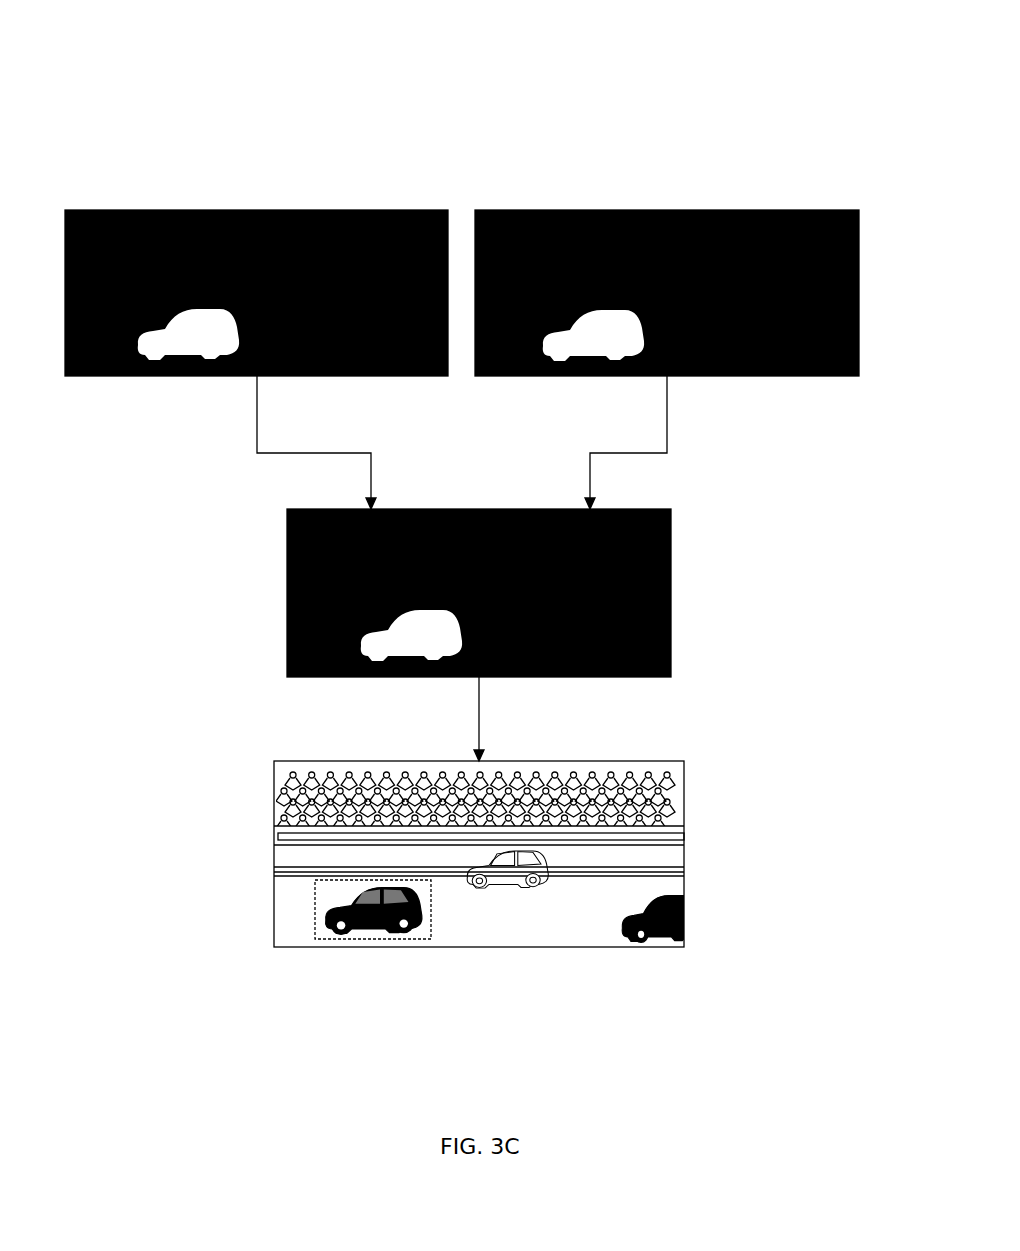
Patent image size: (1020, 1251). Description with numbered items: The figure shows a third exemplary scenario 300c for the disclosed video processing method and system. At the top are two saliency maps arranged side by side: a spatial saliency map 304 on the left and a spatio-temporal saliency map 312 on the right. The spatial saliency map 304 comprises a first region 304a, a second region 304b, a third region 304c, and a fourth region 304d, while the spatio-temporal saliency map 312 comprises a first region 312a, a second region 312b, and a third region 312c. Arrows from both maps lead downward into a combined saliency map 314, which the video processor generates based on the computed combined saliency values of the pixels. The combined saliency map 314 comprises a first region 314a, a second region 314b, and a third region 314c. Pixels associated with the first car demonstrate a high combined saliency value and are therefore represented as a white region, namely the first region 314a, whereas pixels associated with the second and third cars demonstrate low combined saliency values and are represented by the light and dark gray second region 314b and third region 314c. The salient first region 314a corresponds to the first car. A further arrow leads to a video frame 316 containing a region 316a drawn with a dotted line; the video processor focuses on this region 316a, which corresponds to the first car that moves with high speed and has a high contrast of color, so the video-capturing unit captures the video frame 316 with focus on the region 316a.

The third exemplary scenario 300c is at (762, 68).
The spatial saliency map 304 is at (383, 202).
The first region 304a is at (188, 334).
The second region 304b is at (318, 299).
The third region 304c is at (397, 348).
The fourth region 304d is at (240, 222).
The spatio-temporal saliency map 312 is at (783, 202).
The first region 312a is at (593, 335).
The second region 312b is at (711, 292).
The third region 312c is at (807, 348).
The combined saliency map 314 is at (664, 560).
The first region 314a is at (411, 635).
The second region 314b is at (533, 593).
The third region 314c is at (648, 640).
The video frame 316 is at (674, 819).
The region 316a is at (307, 907).